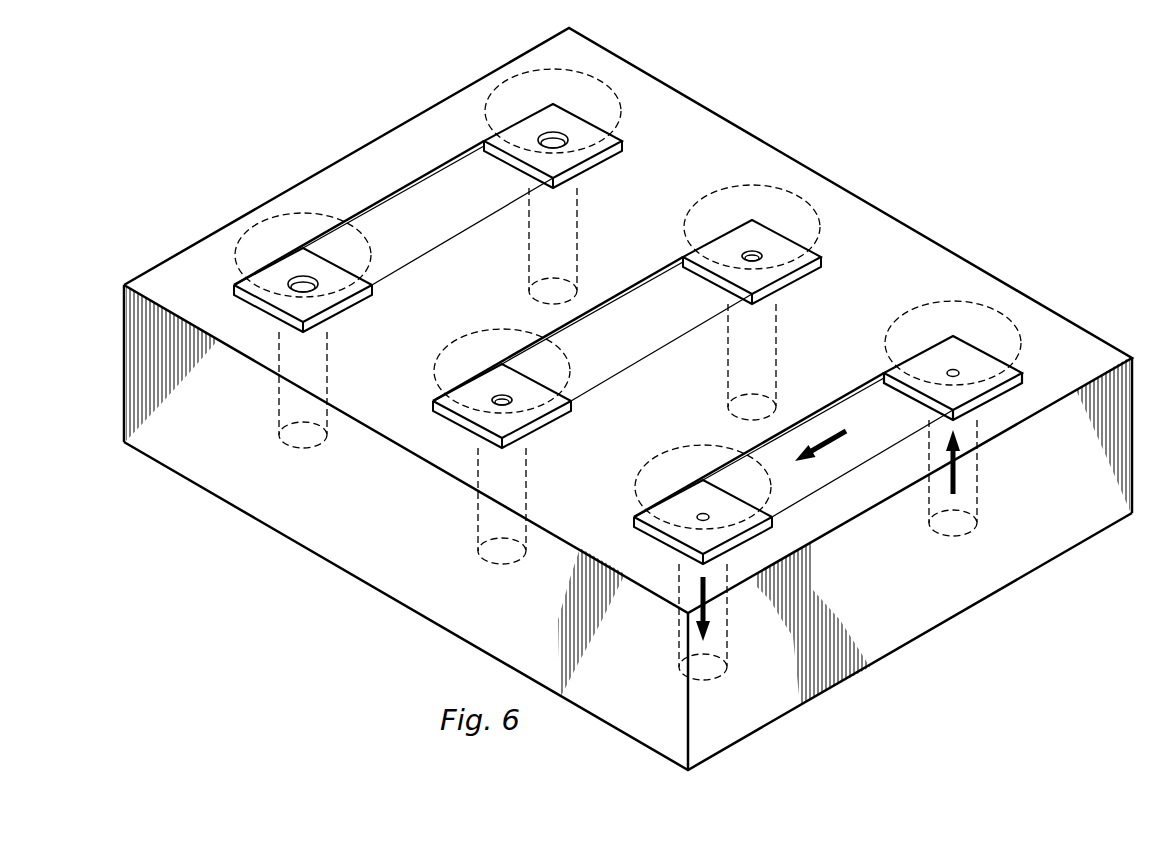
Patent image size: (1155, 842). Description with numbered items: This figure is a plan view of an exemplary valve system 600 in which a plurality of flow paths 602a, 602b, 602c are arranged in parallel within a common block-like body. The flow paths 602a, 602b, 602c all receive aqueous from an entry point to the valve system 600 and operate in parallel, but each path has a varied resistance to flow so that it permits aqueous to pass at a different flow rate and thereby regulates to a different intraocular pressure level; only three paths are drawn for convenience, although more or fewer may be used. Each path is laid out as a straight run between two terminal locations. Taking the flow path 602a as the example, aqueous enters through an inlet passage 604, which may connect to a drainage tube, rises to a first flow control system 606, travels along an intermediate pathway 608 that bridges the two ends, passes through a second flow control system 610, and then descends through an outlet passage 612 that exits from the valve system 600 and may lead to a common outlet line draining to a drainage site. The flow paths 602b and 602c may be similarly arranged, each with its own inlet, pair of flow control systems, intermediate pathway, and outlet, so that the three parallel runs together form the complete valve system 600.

The valve system 600 is at (883, 100).
The flow path 602a is at (788, 474).
The flow path 602b is at (409, 397).
The flow path 602c is at (212, 283).
The inlet passage 604 is at (982, 501).
The first flow control system 606 is at (925, 319).
The intermediate pathway 608 is at (866, 396).
The second flow control system 610 is at (674, 462).
The outlet passage 612 is at (729, 645).